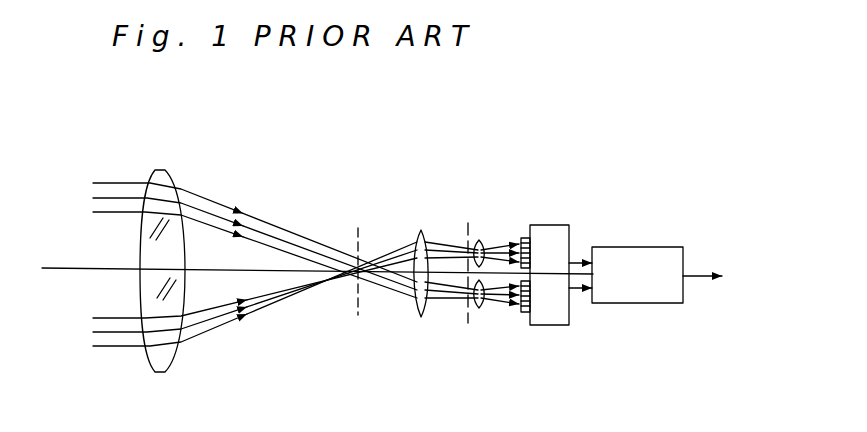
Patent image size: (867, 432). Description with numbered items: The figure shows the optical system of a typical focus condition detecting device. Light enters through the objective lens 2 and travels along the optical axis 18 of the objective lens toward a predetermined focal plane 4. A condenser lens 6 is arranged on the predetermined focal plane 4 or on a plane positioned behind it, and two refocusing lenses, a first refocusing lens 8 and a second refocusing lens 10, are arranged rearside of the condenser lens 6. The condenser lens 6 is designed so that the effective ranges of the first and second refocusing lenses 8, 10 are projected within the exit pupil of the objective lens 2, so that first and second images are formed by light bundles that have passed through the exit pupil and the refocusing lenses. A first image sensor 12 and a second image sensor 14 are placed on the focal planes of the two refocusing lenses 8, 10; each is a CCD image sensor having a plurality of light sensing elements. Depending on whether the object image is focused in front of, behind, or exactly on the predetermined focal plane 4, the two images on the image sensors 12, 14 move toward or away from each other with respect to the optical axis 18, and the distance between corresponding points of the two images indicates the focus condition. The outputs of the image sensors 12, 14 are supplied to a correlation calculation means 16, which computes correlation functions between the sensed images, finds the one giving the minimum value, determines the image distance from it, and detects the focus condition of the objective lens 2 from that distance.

The objective lens 2 is at (156, 366).
The predetermined focal plane 4 is at (356, 314).
The condenser lens 6 is at (416, 318).
The first refocusing lens 8 is at (483, 240).
The second refocusing lens 10 is at (471, 312).
The first image sensor 12 is at (525, 238).
The second image sensor 14 is at (524, 314).
The correlation calculation means 16 is at (640, 247).
The optical axis 18 is at (67, 268).